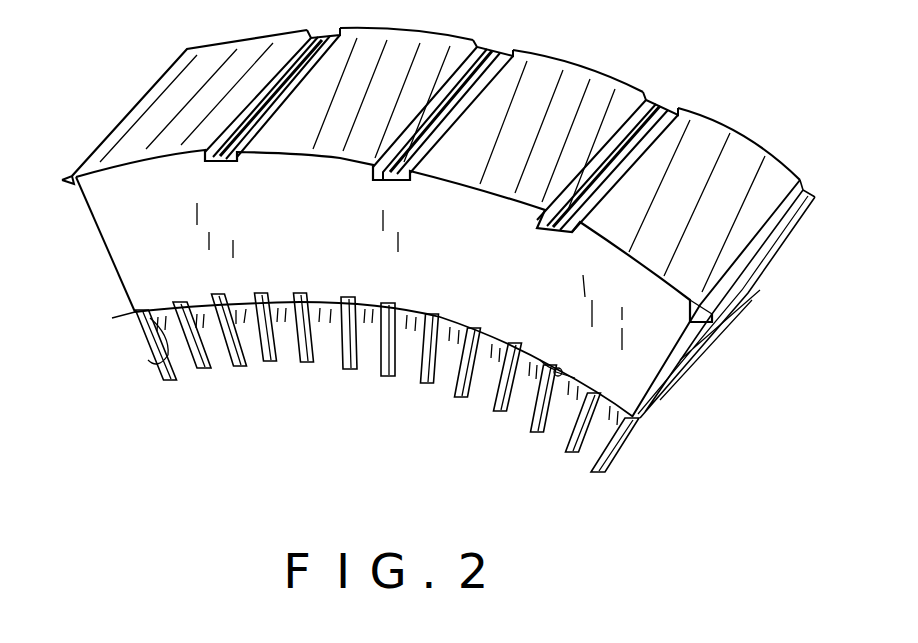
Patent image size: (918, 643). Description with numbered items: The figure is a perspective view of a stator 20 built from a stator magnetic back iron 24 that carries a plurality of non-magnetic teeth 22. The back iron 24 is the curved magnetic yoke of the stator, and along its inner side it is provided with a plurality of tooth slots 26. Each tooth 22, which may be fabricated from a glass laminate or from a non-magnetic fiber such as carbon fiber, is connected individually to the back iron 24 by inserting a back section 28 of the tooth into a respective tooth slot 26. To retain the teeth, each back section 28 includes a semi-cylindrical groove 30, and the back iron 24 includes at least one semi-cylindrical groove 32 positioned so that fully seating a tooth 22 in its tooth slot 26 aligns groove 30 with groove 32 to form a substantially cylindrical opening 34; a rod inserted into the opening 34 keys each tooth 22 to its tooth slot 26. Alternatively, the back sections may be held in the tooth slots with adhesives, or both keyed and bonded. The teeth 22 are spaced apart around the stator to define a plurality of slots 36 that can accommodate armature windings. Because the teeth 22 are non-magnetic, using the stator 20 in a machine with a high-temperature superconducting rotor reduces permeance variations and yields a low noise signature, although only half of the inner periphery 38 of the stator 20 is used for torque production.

The stator 20 is at (292, 452).
The non-magnetic teeth 22 is at (270, 363).
The stator magnetic back iron 24 is at (715, 340).
The tooth slots 26 is at (407, 307).
The back section 28 is at (112, 318).
The semi-cylindrical groove 30 is at (550, 363).
The semi-cylindrical groove 32 is at (567, 378).
The cylindrical opening 34 is at (562, 367).
The slots 36 is at (227, 365).
The inner periphery 38 is at (635, 490).